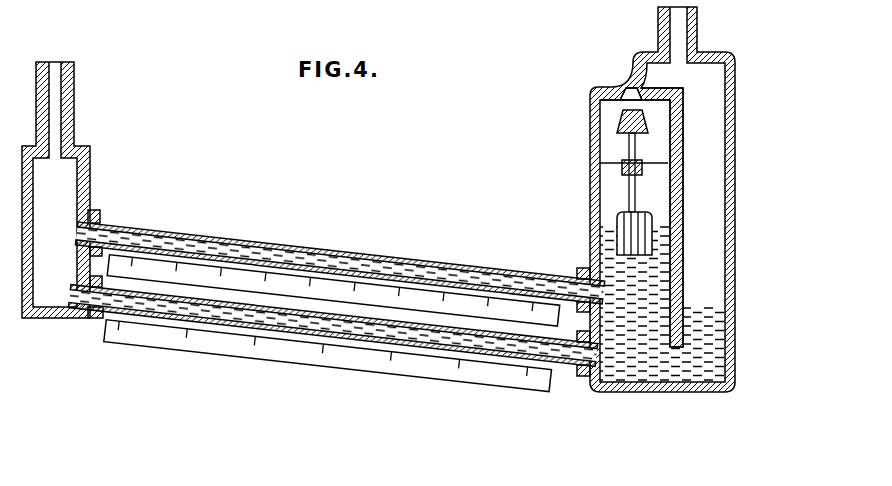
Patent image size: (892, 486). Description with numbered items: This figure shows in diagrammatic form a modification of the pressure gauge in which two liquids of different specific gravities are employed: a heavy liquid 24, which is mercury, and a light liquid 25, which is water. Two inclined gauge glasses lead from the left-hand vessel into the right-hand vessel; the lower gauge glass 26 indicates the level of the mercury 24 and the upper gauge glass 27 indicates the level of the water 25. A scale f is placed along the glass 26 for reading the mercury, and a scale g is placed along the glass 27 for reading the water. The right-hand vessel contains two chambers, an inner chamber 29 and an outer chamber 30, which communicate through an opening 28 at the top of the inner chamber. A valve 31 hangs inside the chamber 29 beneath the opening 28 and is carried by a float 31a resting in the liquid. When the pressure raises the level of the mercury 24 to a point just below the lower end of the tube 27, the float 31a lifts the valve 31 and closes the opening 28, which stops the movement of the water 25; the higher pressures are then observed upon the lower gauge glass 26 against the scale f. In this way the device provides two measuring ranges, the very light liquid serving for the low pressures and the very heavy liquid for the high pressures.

The liquid 24 is at (702, 363).
The liquid 25 is at (623, 275).
The gauge glass 26 is at (180, 307).
The gauge glass 27 is at (222, 247).
The opening 28 is at (632, 92).
The chamber 29 is at (613, 188).
The chamber 30 is at (710, 183).
The valve 31 is at (616, 122).
The float 31a is at (623, 225).
The scale f is at (312, 353).
The scale g is at (472, 312).